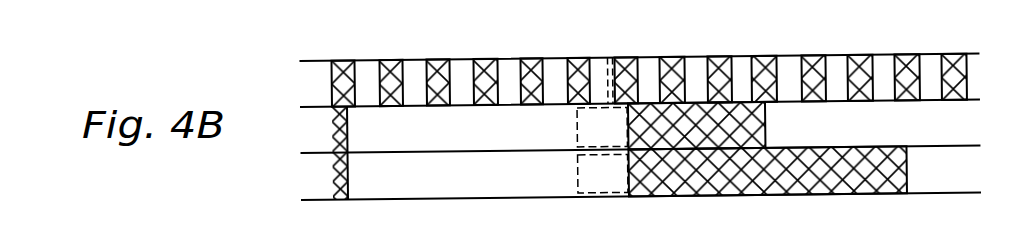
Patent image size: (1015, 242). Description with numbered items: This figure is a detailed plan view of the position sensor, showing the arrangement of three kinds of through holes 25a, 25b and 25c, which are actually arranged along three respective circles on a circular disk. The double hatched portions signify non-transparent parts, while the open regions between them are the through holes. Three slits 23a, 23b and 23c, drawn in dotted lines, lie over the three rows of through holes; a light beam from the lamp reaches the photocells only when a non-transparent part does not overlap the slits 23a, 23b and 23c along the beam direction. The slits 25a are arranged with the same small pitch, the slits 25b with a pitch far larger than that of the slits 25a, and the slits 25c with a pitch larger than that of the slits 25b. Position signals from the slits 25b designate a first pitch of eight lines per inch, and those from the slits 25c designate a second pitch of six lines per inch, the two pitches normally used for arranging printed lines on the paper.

The through holes 25a is at (631, 80).
The through holes 25b is at (631, 126).
The through holes 25c is at (632, 173).
The slit 23a is at (606, 62).
The slit 23b is at (577, 129).
The slit 23c is at (577, 174).